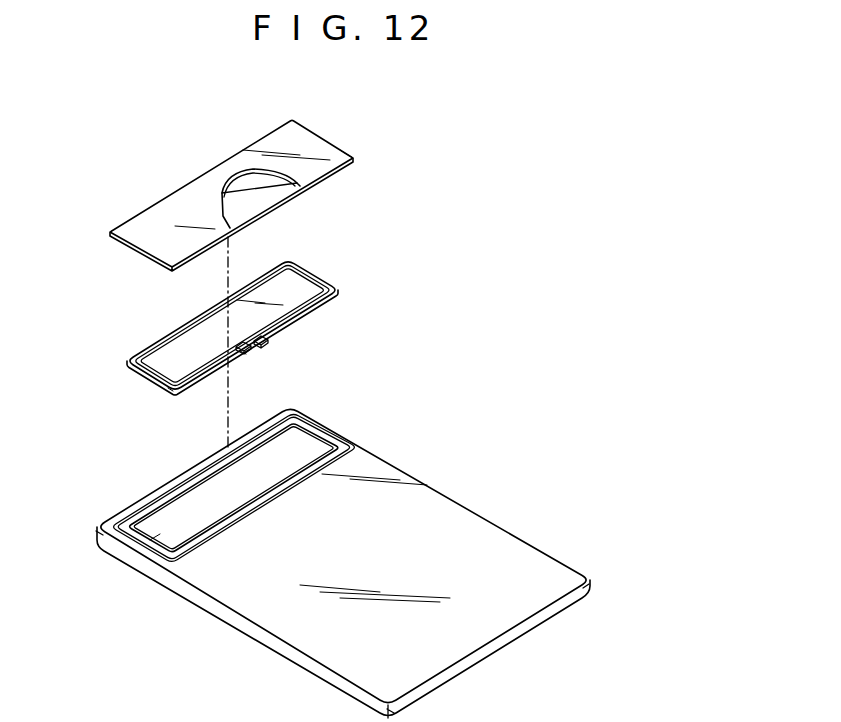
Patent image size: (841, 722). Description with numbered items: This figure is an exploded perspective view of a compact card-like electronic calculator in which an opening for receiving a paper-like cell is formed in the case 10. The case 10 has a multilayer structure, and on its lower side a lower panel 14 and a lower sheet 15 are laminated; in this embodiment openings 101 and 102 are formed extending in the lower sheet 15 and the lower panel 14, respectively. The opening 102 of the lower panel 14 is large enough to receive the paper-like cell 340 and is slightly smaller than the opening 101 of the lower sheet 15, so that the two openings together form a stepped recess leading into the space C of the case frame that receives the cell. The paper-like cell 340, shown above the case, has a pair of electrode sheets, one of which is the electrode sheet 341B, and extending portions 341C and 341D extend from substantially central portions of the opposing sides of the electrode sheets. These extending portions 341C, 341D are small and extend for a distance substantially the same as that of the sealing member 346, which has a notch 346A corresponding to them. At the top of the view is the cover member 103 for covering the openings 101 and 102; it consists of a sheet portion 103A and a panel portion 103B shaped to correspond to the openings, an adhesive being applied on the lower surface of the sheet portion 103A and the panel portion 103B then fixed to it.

The case 10 is at (511, 532).
The lower panel 14 is at (330, 436).
The lower sheet 15 is at (443, 507).
The opening of lower sheet 101 is at (137, 510).
The opening of lower panel 102 is at (217, 531).
The space for receiving the paper-like cell C is at (168, 534).
The paper-like cell 340 is at (136, 374).
The electrode sheet 341B is at (308, 287).
The extending portion 341C is at (266, 347).
The extending portion 341D is at (245, 352).
The sealing member 346 is at (172, 392).
The notch 346A is at (258, 350).
The cover member 103 is at (322, 137).
The sheet portion 103A is at (340, 152).
The panel portion 103B is at (263, 194).